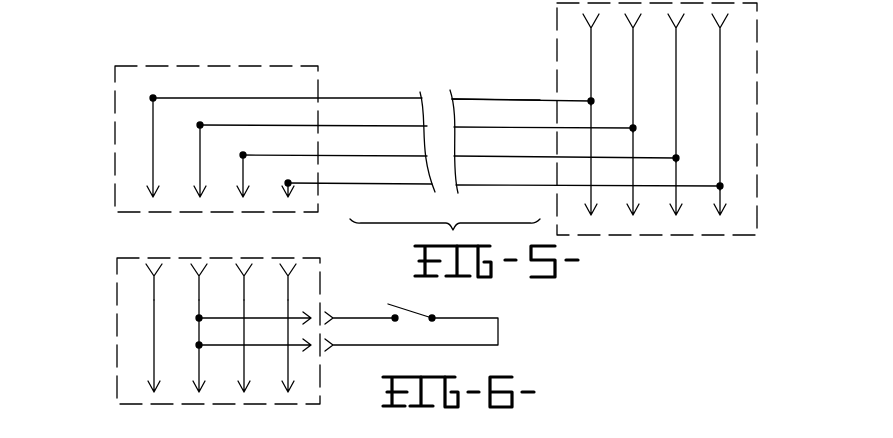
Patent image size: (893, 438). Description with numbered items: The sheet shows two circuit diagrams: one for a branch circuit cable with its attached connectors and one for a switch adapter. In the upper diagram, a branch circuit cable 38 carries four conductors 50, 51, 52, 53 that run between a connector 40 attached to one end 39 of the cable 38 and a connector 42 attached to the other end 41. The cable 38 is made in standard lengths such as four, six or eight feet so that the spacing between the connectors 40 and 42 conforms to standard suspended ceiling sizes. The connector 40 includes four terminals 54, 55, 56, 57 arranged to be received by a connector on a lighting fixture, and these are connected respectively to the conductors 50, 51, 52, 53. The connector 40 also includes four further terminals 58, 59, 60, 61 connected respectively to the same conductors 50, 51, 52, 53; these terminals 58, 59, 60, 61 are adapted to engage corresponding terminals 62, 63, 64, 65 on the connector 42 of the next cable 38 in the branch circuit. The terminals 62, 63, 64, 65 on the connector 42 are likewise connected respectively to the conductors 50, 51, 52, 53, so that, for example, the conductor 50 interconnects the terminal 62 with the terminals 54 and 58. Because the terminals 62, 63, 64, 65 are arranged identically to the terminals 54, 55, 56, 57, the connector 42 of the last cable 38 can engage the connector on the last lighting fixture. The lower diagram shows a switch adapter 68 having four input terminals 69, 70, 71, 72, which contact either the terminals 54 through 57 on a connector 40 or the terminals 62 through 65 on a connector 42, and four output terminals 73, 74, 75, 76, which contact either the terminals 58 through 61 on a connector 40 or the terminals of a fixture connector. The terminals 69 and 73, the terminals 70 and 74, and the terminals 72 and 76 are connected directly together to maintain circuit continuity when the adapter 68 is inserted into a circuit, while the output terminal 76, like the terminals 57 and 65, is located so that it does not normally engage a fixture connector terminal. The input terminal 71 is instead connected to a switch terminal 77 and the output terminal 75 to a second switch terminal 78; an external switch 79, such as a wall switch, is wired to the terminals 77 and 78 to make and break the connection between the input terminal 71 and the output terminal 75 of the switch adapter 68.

In FIG. 5, the branch circuit cable 38 is at (404, 85).
In FIG. 5, the one end of cable 39 is at (545, 99).
In FIG. 5, the connector 40 is at (760, 91).
In FIG. 5, the other end of cable 41 is at (337, 96).
In FIG. 5, the connector 42 is at (218, 66).
In FIG. 5, the conductor 50 is at (509, 186).
In FIG. 5, the conductor 51 is at (509, 157).
In FIG. 5, the conductor 52 is at (509, 128).
In FIG. 5, the conductor 53 is at (492, 99).
In FIG. 5, the terminal 54 is at (724, 212).
In FIG. 5, the terminal 55 is at (679, 217).
In FIG. 5, the terminal 56 is at (636, 217).
In FIG. 5, the terminal 57 is at (594, 217).
In FIG. 5, the terminal 58 is at (728, 18).
In FIG. 5, the terminal 59 is at (685, 20).
In FIG. 5, the terminal 60 is at (642, 20).
In FIG. 5, the terminal 61 is at (600, 20).
In FIG. 5, the terminal 62 is at (291, 199).
In FIG. 5, the terminal 63 is at (246, 199).
In FIG. 5, the terminal 64 is at (203, 199).
In FIG. 5, the terminal 65 is at (156, 199).
In FIG. 6, the switch adapter 68 is at (118, 327).
In FIG. 6, the input terminal 69 is at (295, 268).
In FIG. 6, the input terminal 70 is at (251, 268).
In FIG. 6, the input terminal 71 is at (206, 268).
In FIG. 6, the input terminal 72 is at (150, 268).
In FIG. 6, the output terminal 73 is at (291, 394).
In FIG. 6, the output terminal 74 is at (247, 394).
In FIG. 6, the output terminal 75 is at (202, 394).
In FIG. 6, the output terminal 76 is at (157, 394).
In FIG. 6, the switch terminal 77 is at (313, 318).
In FIG. 6, the second switch terminal 78 is at (313, 346).
In FIG. 6, the external switch 79 is at (421, 312).